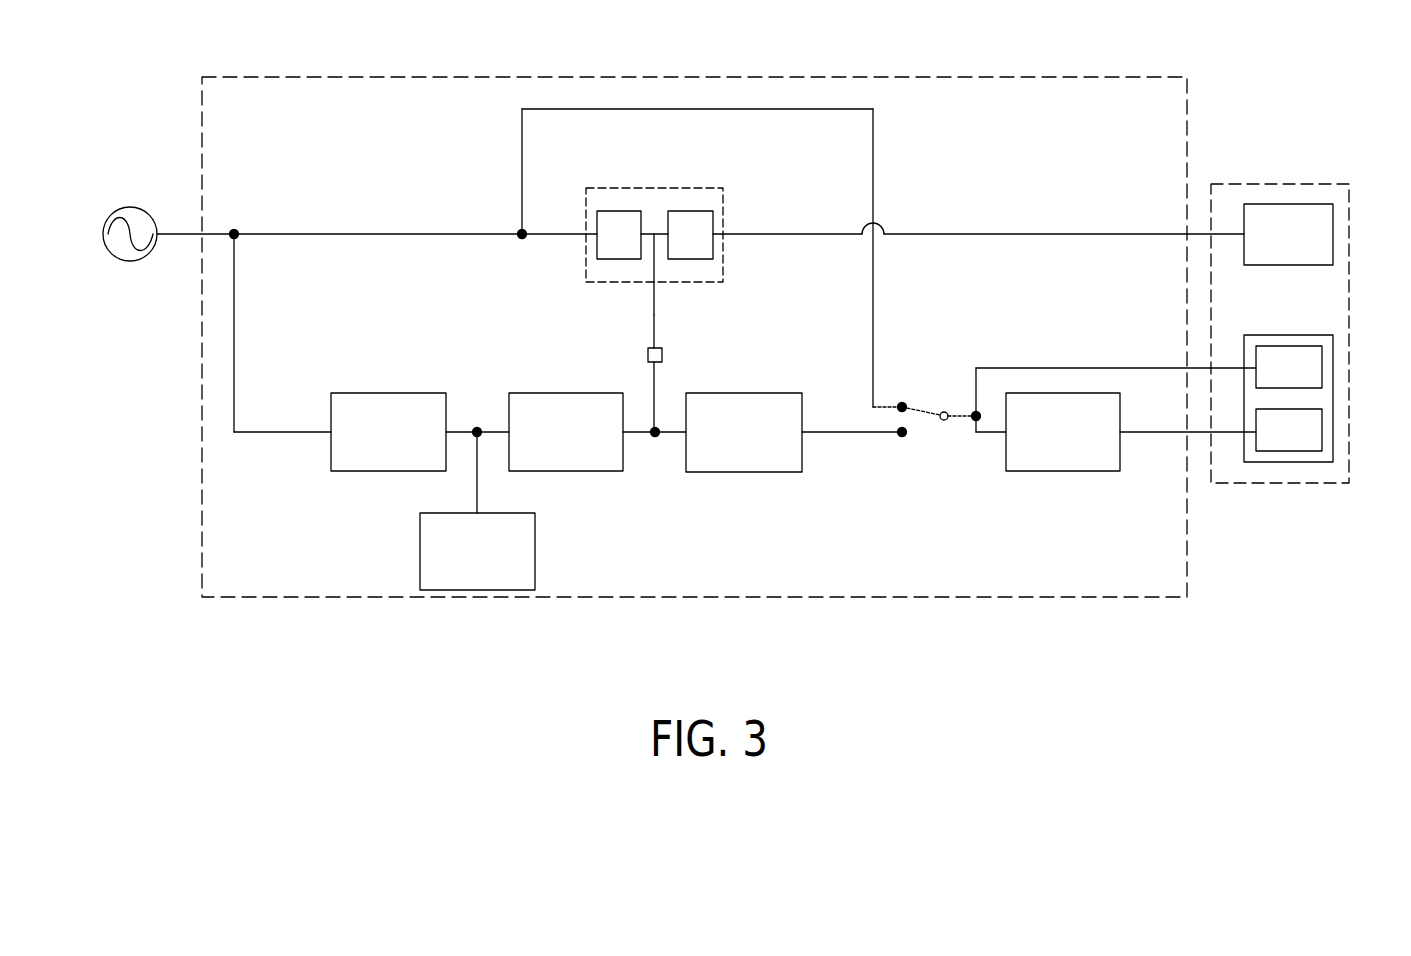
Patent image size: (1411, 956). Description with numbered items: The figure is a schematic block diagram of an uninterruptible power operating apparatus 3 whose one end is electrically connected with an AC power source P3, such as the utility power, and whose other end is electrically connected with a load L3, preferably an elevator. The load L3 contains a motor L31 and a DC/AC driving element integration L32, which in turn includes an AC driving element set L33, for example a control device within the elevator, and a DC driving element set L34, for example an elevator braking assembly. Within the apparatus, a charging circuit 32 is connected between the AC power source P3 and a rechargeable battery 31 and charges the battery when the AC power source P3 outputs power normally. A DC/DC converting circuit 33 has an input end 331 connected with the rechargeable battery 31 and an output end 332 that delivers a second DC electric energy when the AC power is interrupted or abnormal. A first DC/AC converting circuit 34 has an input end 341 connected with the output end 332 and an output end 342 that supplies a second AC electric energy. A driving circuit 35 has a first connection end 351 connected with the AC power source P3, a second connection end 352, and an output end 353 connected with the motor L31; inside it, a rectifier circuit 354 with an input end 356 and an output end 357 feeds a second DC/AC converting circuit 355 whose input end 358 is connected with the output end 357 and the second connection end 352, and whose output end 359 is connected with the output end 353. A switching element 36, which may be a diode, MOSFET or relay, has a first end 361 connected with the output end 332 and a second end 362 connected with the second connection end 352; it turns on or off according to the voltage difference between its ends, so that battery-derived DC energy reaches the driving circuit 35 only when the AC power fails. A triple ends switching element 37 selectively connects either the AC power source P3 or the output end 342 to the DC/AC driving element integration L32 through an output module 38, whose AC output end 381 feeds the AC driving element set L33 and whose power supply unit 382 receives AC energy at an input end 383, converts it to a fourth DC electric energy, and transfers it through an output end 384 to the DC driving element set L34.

The uninterruptible power operating apparatus 3 is at (1160, 77).
The AC power source P3 is at (128, 207).
The rechargeable battery 31 is at (535, 538).
The charging circuit 32 is at (388, 393).
The DC/DC converting circuit 33 is at (566, 393).
The input end 331 is at (508, 430).
The output end 332 is at (624, 436).
The first DC/AC converting circuit 34 is at (744, 393).
The input end 341 is at (686, 435).
The output end 342 is at (803, 432).
The driving circuit 35 is at (723, 220).
The first connection end 351 is at (586, 236).
The second connection end 352 is at (652, 284).
The output end 353 is at (723, 240).
The rectifier circuit 354 is at (619, 211).
The second DC/AC converting circuit 355 is at (690, 211).
The input end 356 is at (596, 228).
The output end 357 is at (643, 232).
The input end 358 is at (667, 244).
The output end 359 is at (716, 232).
The switching element 36 is at (662, 355).
The first end 361 is at (656, 363).
The second end 362 is at (661, 348).
The triple ends switching element 37 is at (938, 475).
The output module 38 is at (1072, 485).
The AC output end 381 is at (1022, 368).
The power supply unit 382 is at (1108, 393).
The input end 383 is at (1005, 436).
The output end 384 is at (1122, 436).
The load L3 is at (1283, 184).
The motor L31 is at (1333, 235).
The DC/AC driving element integration L32 is at (1333, 393).
The AC driving element set L33 is at (1322, 355).
The DC driving element set L34 is at (1322, 438).